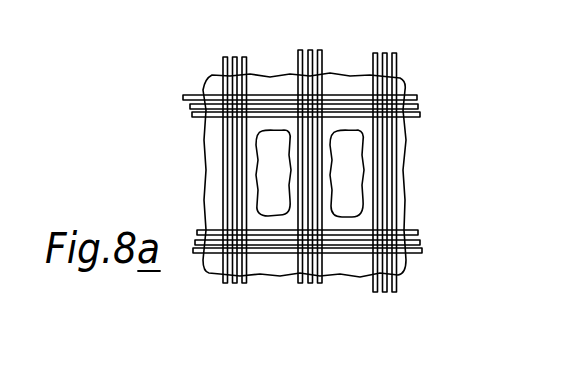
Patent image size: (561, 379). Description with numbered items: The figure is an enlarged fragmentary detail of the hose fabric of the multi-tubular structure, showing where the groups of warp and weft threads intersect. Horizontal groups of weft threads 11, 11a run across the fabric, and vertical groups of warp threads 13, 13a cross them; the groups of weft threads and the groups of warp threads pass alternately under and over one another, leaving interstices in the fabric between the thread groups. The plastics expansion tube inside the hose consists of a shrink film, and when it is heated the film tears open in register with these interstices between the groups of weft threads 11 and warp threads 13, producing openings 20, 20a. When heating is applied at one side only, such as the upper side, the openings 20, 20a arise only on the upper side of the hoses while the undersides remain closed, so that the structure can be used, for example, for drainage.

The weft thread 11 is at (187, 97).
The weft thread 11a is at (198, 258).
The warp thread 13 is at (247, 57).
The warp thread 13a is at (378, 39).
The opening 20 is at (270, 164).
The opening 20a is at (352, 174).